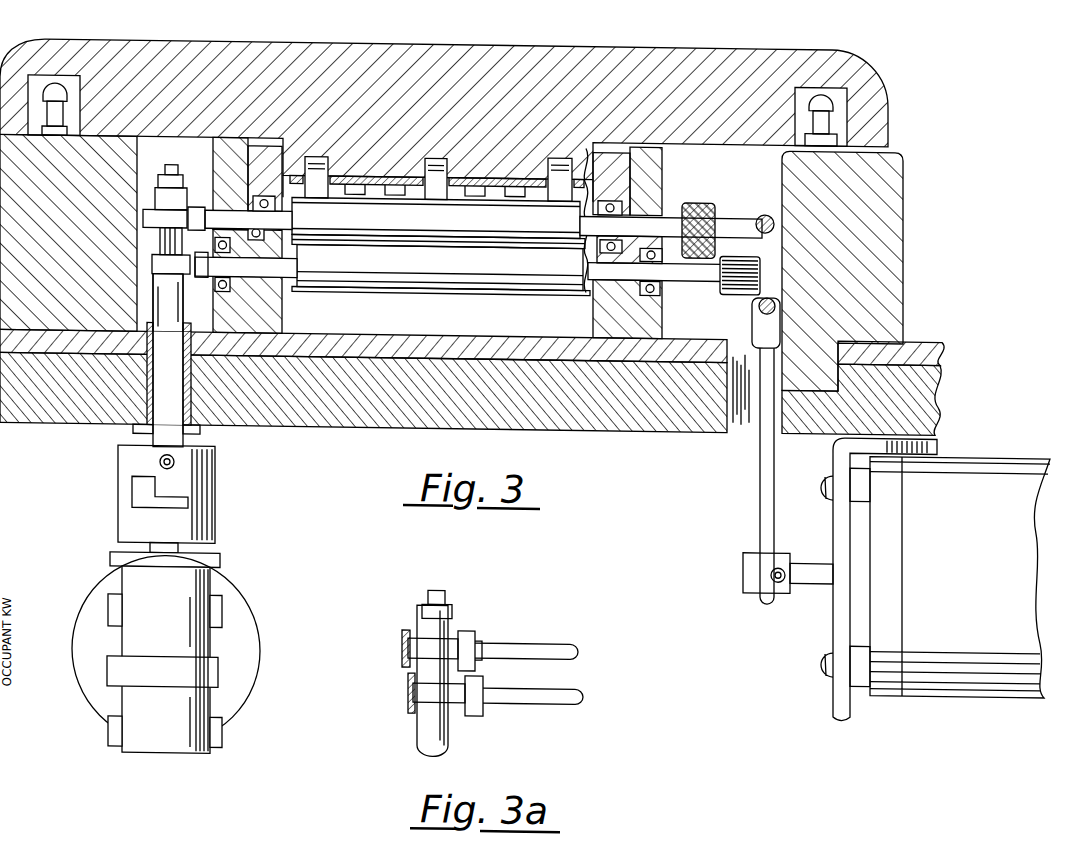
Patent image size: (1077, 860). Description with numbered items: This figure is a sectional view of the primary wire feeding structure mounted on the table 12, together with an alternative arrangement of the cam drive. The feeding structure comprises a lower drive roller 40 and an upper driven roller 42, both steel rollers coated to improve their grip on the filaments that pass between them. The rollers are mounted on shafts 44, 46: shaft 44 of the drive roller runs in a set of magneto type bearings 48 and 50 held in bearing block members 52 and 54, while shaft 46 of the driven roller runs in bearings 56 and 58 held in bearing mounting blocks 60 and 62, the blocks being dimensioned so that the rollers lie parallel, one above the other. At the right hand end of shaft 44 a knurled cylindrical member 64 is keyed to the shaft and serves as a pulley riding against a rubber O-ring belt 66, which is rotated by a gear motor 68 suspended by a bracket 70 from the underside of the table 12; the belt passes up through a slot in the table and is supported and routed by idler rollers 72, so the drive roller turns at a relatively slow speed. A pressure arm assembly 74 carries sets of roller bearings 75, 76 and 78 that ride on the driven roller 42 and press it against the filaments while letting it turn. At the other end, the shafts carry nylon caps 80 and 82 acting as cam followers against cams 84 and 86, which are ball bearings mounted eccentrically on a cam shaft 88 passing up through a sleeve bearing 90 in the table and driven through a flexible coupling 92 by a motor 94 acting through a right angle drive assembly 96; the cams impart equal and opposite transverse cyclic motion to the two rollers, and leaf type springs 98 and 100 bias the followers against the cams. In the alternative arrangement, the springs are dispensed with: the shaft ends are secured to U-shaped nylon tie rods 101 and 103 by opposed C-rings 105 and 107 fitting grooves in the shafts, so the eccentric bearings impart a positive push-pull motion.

In FIG. 3, the table 12 is at (570, 430).
In FIG. 3, the lower drive roller 40 is at (472, 291).
In FIG. 3, the upper driven roller 42 is at (378, 248).
In FIG. 3, the shaft 44 is at (286, 285).
In FIG. 3a, the shaft 44 is at (560, 643).
In FIG. 3, the shaft 46 is at (218, 214).
In FIG. 3a, the shaft 46 is at (556, 688).
In FIG. 3, the magneto type bearing 48 is at (216, 290).
In FIG. 3, the magneto type bearing 50 is at (652, 293).
In FIG. 3, the bearing block member 52 is at (232, 145).
In FIG. 3, the bearing block member 54 is at (652, 146).
In FIG. 3, the magneto type bearing 56 is at (257, 198).
In FIG. 3, the magneto type bearing 58 is at (627, 202).
In FIG. 3, the bearing mounting block 60 is at (283, 147).
In FIG. 3, the bearing mounting block 62 is at (605, 150).
In FIG. 3, the knurled cylindrical member 64 is at (745, 287).
In FIG. 3, the rubber O-ring belt 66 is at (757, 492).
In FIG. 3, the gear motor 68 is at (990, 452).
In FIG. 3, the bracket 70 is at (835, 617).
In FIG. 3, the idler rollers 72 is at (757, 209).
In FIG. 3, the pressure arm assembly 74 is at (633, 43).
In FIG. 3, the roller bearings 75 is at (317, 161).
In FIG. 3, the roller bearings 76 is at (436, 160).
In FIG. 3, the roller bearings 78 is at (555, 160).
In FIG. 3, the nylon cap 80 is at (199, 210).
In FIG. 3, the nylon cap 82 is at (203, 288).
In FIG. 3, the cam 84 is at (143, 215).
In FIG. 3a, the cam 84 is at (404, 662).
In FIG. 3, the cam 86 is at (150, 262).
In FIG. 3a, the cam 86 is at (410, 712).
In FIG. 3, the cam shaft 88 is at (143, 440).
In FIG. 3a, the cam shaft 88 is at (418, 738).
In FIG. 3, the sleeve bearing 90 is at (200, 434).
In FIG. 3, the flexible coupling 92 is at (216, 496).
In FIG. 3, the motor 94 is at (256, 612).
In FIG. 3, the right angle drive assembly 96 is at (178, 756).
In FIG. 3, the leaf type spring 98 is at (587, 175).
In FIG. 3, the leaf type spring 100 is at (588, 298).
In FIG. 3a, the tie rod 101 is at (400, 627).
In FIG. 3a, the tie rod 103 is at (405, 684).
In FIG. 3a, the C-ring 105 is at (476, 640).
In FIG. 3a, the C-ring 107 is at (460, 632).